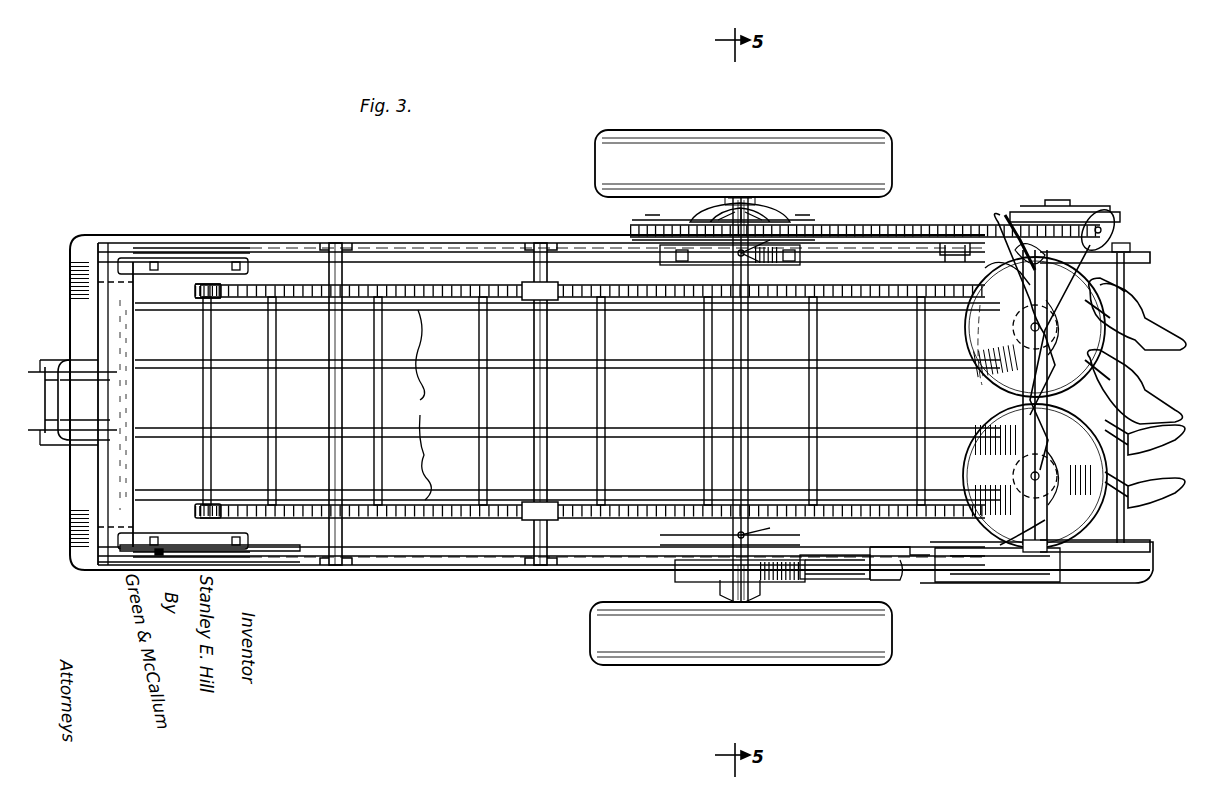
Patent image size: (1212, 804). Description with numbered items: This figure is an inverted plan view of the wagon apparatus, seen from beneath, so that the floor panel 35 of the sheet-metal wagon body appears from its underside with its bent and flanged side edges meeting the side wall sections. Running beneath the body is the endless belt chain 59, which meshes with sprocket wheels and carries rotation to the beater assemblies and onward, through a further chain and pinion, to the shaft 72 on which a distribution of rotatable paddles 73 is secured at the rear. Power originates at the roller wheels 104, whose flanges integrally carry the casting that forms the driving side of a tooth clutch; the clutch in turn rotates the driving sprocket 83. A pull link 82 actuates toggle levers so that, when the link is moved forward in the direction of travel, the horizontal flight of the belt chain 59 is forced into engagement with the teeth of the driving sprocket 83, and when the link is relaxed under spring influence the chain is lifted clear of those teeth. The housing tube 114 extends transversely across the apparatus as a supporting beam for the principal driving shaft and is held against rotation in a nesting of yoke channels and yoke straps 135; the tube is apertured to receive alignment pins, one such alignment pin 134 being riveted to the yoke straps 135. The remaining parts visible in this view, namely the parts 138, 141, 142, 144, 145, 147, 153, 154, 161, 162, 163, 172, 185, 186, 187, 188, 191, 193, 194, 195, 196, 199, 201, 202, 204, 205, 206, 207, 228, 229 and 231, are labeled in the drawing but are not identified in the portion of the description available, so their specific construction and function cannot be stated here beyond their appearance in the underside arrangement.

The floor panel 35 is at (567, 395).
The endless belt chain 59 is at (918, 226).
The shaft 72 is at (1130, 280).
The rotatable paddles 73 is at (1140, 335).
The pull link 82 is at (290, 243).
The driving sprocket 83 is at (695, 218).
The roller wheels 104 is at (890, 160).
The housing tube 114 is at (749, 400).
The alignment pin 134 is at (770, 240).
The yoke straps 135 is at (762, 268).
The conveyor slats 138 is at (428, 405).
The end post 141 is at (203, 458).
The sprocket shaft 142 is at (205, 320).
The upper conveyor chain 144 is at (395, 285).
The lower conveyor chain 145 is at (405, 512).
The sprockets 147 is at (212, 300).
The bracket 153 is at (878, 584).
The bearing 154 is at (800, 580).
The frame member 161 is at (292, 572).
The axle support 162 is at (712, 580).
The rail 163 is at (145, 545).
The cross post 172 is at (702, 395).
The belt guard 185 is at (1045, 212).
The belt 186 is at (995, 255).
The belt run 187 is at (1002, 215).
The pulley 188 is at (1108, 222).
The hub 191 is at (1050, 320).
The lower disc 193 is at (1031, 476).
The upper disc hub 194 is at (1031, 327).
The lower hub 195 is at (1050, 470).
The arm 196 is at (1040, 514).
The disc gap 199 is at (1012, 404).
The upper disc 201 is at (1035, 327).
The vertical bar 202 is at (1018, 550).
The upper disc face 204 is at (968, 380).
The lower disc face 205 is at (968, 455).
The disc rim 206 is at (1092, 310).
The disc rim 207 is at (1090, 444).
The side rail 228 is at (250, 245).
The bolt 229 is at (536, 258).
The vertical post 231 is at (340, 282).